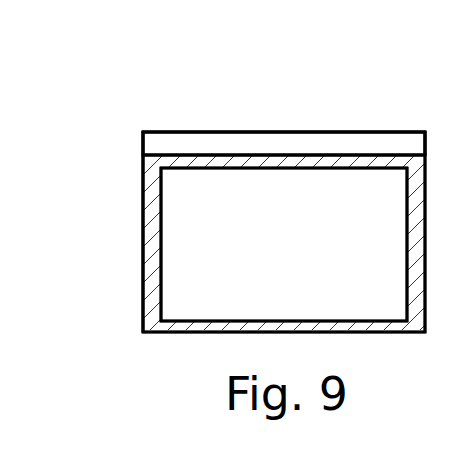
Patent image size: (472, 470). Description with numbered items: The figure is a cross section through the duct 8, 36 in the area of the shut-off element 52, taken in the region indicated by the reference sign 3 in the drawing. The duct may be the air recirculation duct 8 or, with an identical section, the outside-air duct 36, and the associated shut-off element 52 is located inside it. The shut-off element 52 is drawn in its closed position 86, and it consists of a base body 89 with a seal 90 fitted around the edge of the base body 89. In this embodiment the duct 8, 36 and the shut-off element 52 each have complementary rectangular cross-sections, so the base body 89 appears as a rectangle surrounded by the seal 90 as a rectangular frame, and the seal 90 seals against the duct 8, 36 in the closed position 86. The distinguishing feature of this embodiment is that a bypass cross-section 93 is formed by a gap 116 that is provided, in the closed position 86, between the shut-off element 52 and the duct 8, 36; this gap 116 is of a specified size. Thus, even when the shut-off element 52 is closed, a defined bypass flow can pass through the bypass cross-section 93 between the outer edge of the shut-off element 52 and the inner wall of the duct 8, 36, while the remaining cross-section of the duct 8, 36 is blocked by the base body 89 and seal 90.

The battery system / housing 3 is at (165, 117).
The air recirculation duct 8 is at (413, 128).
The outside-air duct 36 is at (284, 232).
The bypass cross-section 93 is at (246, 142).
The gap 116 is at (284, 143).
The recirculated-air shut-off element 52 is at (348, 150).
The closed position 86 is at (141, 180).
The base body 89 is at (185, 240).
The seal 90 is at (155, 290).